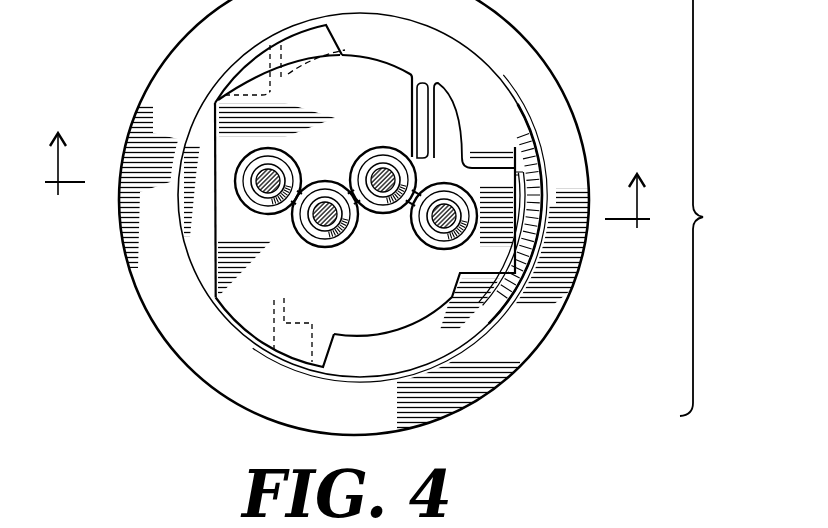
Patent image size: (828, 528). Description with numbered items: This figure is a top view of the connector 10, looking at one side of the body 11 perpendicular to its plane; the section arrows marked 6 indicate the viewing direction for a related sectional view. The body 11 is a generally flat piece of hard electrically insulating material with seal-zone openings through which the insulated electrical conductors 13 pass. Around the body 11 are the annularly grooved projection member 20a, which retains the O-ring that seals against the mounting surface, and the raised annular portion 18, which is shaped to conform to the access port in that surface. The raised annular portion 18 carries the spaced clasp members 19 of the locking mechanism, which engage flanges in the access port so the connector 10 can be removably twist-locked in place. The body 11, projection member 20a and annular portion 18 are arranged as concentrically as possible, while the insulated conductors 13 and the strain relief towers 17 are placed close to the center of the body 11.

The connector 10 is at (706, 208).
The body 11 is at (527, 362).
The insulated electrical conductors 13 is at (366, 240).
The strain relief towers 17 is at (303, 250).
The raised annular portion 18 is at (397, 330).
The clasp members 19 is at (342, 55).
The annularly grooved projection member 20a is at (492, 319).
The section line for FIG. 6 is at (347, 168).